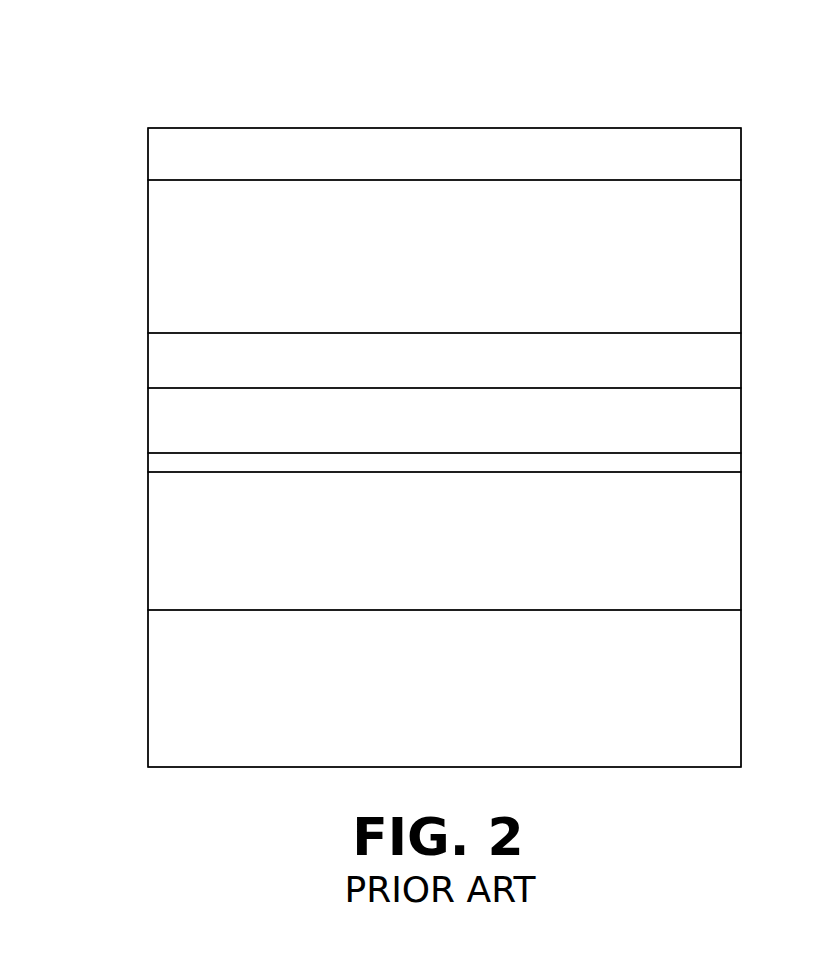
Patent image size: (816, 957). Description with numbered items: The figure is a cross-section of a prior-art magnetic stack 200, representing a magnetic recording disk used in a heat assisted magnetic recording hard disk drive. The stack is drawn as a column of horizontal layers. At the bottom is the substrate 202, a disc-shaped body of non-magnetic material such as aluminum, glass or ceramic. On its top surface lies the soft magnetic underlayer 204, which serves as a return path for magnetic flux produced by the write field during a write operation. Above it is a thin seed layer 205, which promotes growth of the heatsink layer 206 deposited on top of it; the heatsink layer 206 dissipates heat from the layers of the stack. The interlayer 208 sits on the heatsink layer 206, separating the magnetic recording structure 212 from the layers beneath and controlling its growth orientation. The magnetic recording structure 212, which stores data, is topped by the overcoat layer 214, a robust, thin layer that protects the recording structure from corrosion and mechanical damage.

The magnetic stack 200 is at (212, 56).
The substrate 202 is at (148, 692).
The soft magnetic underlayer 204 is at (148, 532).
The seed layer 205 is at (148, 462).
The heatsink layer 206 is at (148, 425).
The interlayer 208 is at (148, 360).
The magnetic recording structure 212 is at (148, 255).
The overcoat layer 214 is at (148, 155).